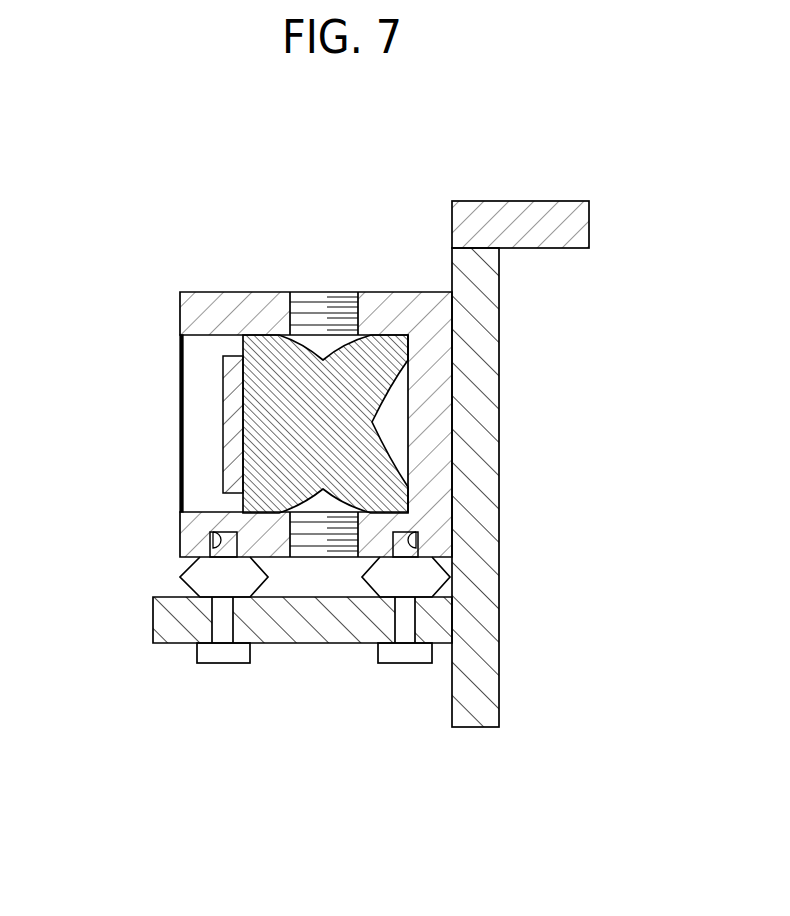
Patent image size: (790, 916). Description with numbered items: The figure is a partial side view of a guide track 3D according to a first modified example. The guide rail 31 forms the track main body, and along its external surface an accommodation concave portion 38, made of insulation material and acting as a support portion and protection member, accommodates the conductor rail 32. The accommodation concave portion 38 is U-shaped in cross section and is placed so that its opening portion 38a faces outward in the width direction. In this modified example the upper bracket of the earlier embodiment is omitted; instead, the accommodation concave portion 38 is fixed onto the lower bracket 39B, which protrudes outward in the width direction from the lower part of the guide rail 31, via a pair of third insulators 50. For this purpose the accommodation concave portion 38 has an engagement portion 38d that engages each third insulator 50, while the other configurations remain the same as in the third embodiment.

The guide track 3D is at (392, 244).
The guide rail 31 is at (499, 605).
The conductor rail 32 is at (272, 336).
The accommodation concave portion 38 is at (275, 292).
The opening portion 38a is at (181, 336).
The engagement portion 38d is at (222, 532).
The third insulator 50 is at (197, 576).
The lower bracket 39B is at (303, 643).